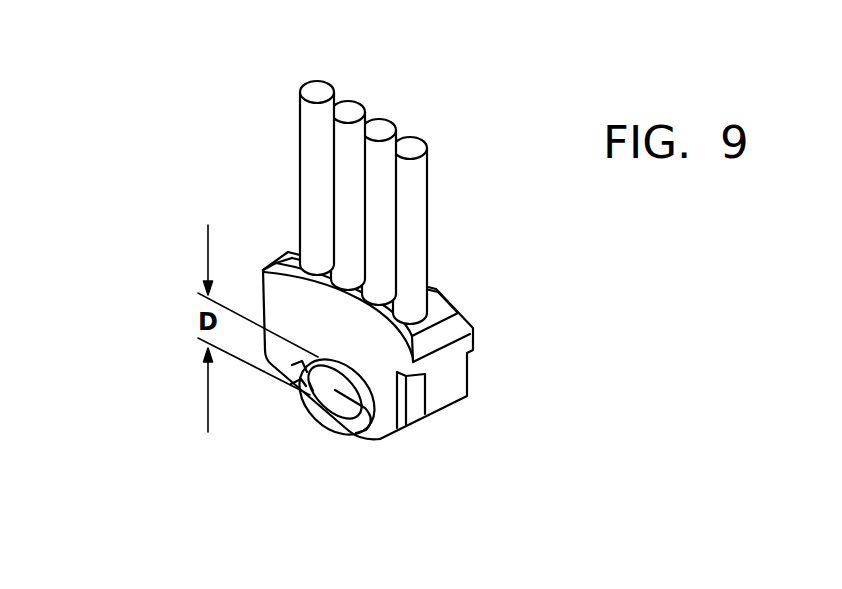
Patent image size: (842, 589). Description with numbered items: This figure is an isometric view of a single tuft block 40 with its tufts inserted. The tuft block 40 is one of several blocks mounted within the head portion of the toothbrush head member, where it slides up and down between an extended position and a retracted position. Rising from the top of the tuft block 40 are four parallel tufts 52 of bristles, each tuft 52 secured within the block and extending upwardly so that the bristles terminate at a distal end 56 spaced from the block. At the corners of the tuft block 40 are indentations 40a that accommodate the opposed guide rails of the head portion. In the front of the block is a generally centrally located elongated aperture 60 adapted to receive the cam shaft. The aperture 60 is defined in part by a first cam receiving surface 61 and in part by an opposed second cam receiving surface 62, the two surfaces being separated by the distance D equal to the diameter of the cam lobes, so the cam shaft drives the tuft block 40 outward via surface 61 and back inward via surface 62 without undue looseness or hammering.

The tuft block 40 is at (155, 241).
The indentation 40a is at (413, 408).
The tuft 52 is at (316, 169).
The distal end 56 is at (322, 90).
The aperture 60 is at (326, 402).
The first cam receiving surface 61 is at (330, 378).
The second cam receiving surface 62 is at (350, 420).